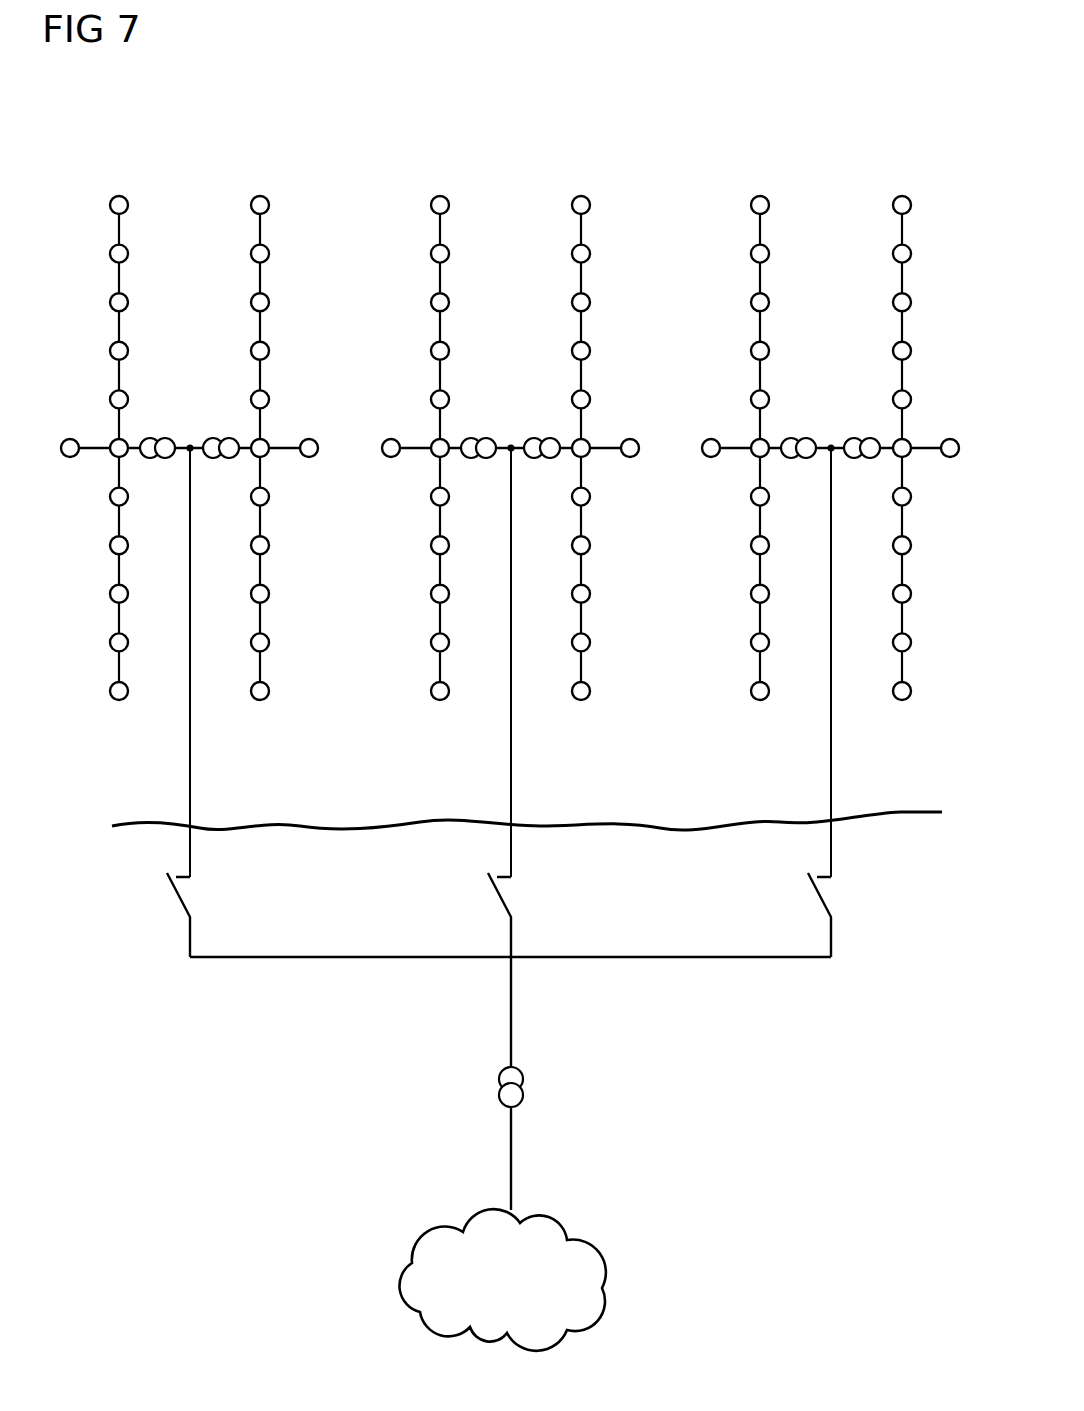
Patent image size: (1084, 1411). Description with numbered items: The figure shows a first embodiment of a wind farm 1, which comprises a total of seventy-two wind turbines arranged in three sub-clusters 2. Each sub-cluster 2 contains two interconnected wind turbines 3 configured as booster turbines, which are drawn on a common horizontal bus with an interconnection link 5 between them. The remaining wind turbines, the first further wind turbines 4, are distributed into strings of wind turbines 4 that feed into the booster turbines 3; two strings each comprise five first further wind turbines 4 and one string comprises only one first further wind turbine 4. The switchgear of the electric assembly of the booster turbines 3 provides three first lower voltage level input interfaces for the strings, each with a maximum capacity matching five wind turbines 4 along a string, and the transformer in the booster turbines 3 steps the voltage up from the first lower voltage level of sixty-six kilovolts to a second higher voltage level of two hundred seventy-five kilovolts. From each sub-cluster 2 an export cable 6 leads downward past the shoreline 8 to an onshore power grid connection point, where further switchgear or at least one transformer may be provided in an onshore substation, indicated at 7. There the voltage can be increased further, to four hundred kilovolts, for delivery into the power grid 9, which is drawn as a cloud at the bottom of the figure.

The wind farm 1 is at (90, 230).
The sub-cluster 2 is at (210, 158).
The wind turbine (booster turbine) 3 is at (112, 455).
The first further wind turbine 4 is at (268, 200).
The interconnection link 5 is at (190, 440).
The export cable 6 is at (189, 764).
The collection switchgear 7 is at (885, 977).
The shoreline 8 is at (902, 810).
The power grid 9 is at (608, 1296).